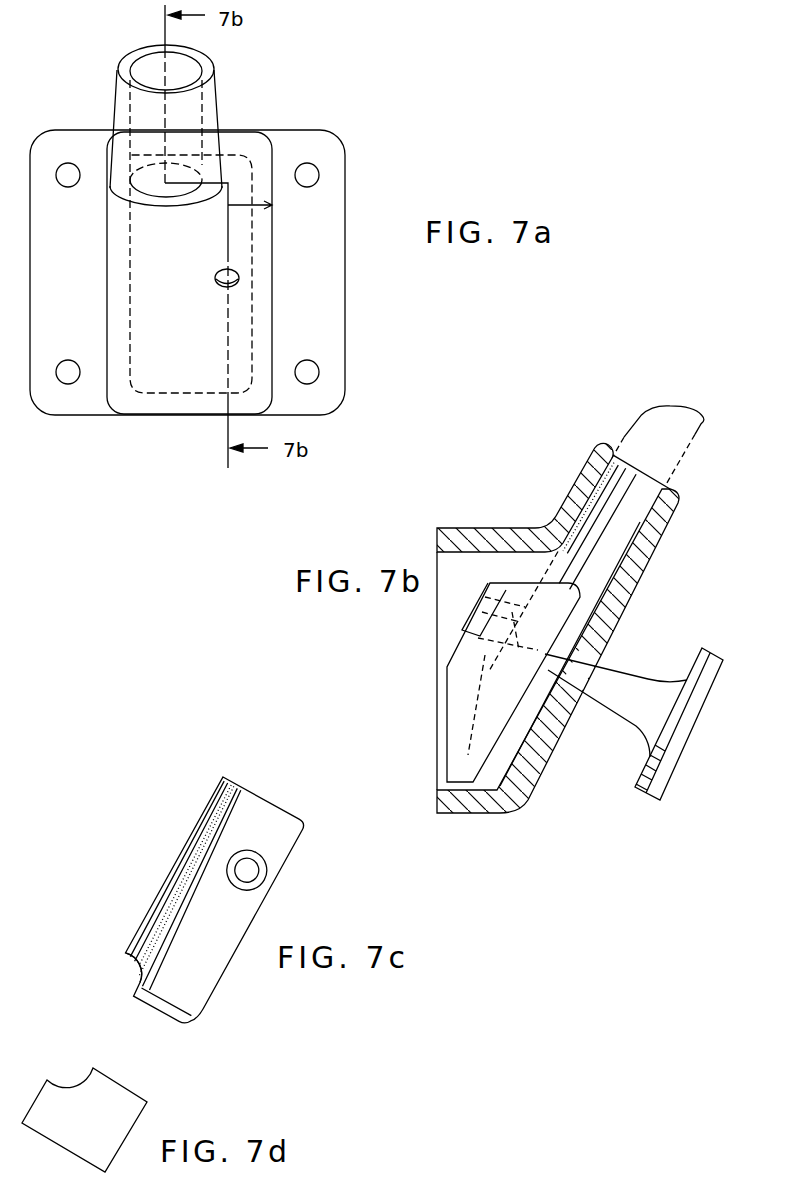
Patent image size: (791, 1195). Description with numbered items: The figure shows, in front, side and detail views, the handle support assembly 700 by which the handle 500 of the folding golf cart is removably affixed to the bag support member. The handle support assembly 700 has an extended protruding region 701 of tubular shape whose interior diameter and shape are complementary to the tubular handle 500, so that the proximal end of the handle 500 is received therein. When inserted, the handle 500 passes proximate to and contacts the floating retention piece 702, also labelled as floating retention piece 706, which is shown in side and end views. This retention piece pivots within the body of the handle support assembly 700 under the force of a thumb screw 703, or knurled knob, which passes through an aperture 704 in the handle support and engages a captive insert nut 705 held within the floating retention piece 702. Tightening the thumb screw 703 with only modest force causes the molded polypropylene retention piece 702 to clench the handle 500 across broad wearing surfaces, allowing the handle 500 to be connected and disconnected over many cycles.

In FIG. 7B, the handle 500 is at (650, 432).
In FIG. 7A, the handle support assembly 700 is at (372, 337).
In FIG. 7A, the extended protruding region 701 is at (208, 114).
In FIG. 7B, the extended protruding region 701 is at (587, 482).
In FIG. 7B, the floating retention piece 702 is at (508, 667).
In FIG. 7C, the floating retention piece 702 is at (191, 1045).
In FIG. 7D, the floating retention piece 702 is at (165, 1118).
In FIG. 7B, the thumb screw 703 is at (663, 798).
In FIG. 7A, the aperture 704 is at (231, 282).
In FIG. 7C, the captive insert nut 705 is at (262, 883).
In FIG. 7C, the floating retention piece 706 is at (272, 820).